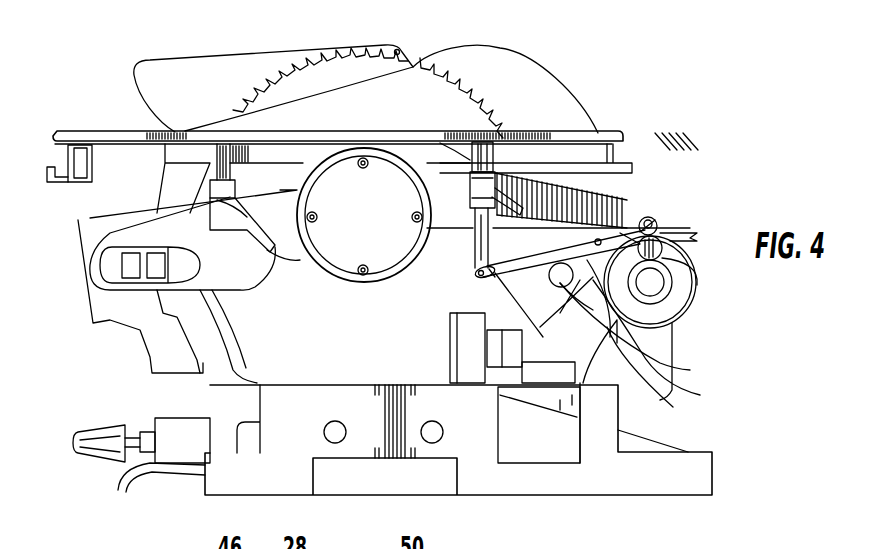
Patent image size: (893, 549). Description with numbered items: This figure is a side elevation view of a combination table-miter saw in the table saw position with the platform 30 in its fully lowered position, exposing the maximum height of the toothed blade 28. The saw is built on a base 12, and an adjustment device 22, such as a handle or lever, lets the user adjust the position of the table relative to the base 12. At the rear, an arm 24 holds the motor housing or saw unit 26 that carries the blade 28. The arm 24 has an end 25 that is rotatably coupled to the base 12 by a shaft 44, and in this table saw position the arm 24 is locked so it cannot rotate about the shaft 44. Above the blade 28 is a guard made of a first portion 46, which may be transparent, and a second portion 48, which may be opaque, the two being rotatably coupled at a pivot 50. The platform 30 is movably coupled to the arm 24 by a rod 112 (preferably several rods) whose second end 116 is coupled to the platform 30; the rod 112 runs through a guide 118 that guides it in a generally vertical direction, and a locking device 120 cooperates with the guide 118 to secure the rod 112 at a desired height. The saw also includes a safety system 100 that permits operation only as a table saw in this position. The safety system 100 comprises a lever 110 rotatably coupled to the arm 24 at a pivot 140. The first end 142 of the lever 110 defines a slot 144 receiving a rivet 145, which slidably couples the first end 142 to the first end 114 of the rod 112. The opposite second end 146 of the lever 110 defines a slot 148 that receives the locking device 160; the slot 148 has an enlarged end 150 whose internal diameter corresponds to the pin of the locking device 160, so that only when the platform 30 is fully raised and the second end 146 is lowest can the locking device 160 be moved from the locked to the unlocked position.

The base 12 is at (225, 488).
The adjustment device 22 is at (73, 442).
The arm 24 is at (632, 195).
The end of the arm 25 is at (700, 322).
The motor housing or saw unit 26 is at (348, 260).
The toothed blade 28 is at (252, 100).
The platform 30 is at (68, 131).
The shaft 44 is at (660, 297).
The first portion of the guard 46 is at (162, 70).
The second portion of the guard 48 is at (500, 76).
The pivot 50 is at (393, 52).
The safety system 100 is at (679, 184).
The lever 110 is at (620, 408).
The rod 112 is at (216, 170).
The first end of the rod 114 is at (483, 240).
The second end of the rod 116 is at (477, 157).
The guide 118 is at (212, 196).
The locking device 120 is at (218, 230).
The pivot 140 is at (677, 368).
The first end of the lever 142 is at (480, 274).
The slot 144 is at (495, 280).
The rivet 145 is at (482, 266).
The second end of the lever 146 is at (663, 240).
The slot 148 is at (658, 222).
The enlarged end of the slot 150 is at (649, 215).
The locking device 160 is at (693, 282).